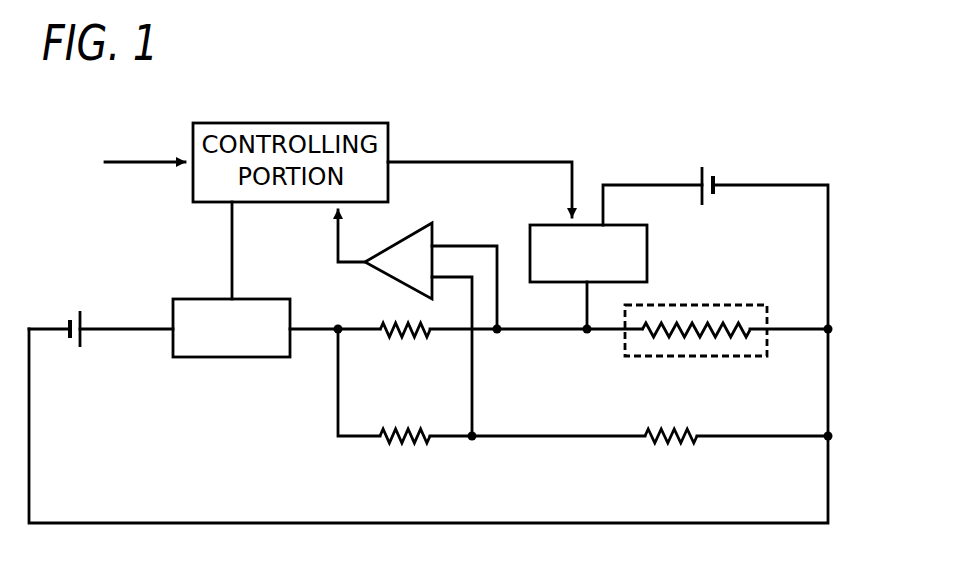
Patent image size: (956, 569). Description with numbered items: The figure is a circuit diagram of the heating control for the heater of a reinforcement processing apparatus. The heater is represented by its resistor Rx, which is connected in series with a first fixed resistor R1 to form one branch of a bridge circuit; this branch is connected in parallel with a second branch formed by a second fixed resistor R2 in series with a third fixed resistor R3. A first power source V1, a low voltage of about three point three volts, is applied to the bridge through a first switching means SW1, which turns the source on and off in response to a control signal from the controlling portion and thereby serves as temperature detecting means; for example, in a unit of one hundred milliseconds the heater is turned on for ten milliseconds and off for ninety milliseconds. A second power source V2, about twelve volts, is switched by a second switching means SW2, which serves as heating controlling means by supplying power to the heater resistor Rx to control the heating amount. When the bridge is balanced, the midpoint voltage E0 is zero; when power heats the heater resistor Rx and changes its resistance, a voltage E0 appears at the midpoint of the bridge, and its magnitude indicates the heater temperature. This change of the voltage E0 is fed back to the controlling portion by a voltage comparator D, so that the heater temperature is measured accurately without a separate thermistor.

The first power source V1 is at (72, 314).
The second power source V2 is at (661, 181).
The first switching means SW1 is at (231, 328).
The second switching means SW2 is at (588, 277).
The voltage comparator D is at (417, 323).
The first fixed resistor R1 is at (405, 345).
The second fixed resistor R2 is at (405, 451).
The third fixed resistor R3 is at (671, 452).
The heater resistor Rx is at (696, 317).
The voltage of the midpoint of the bridge circuit E0 is at (533, 341).